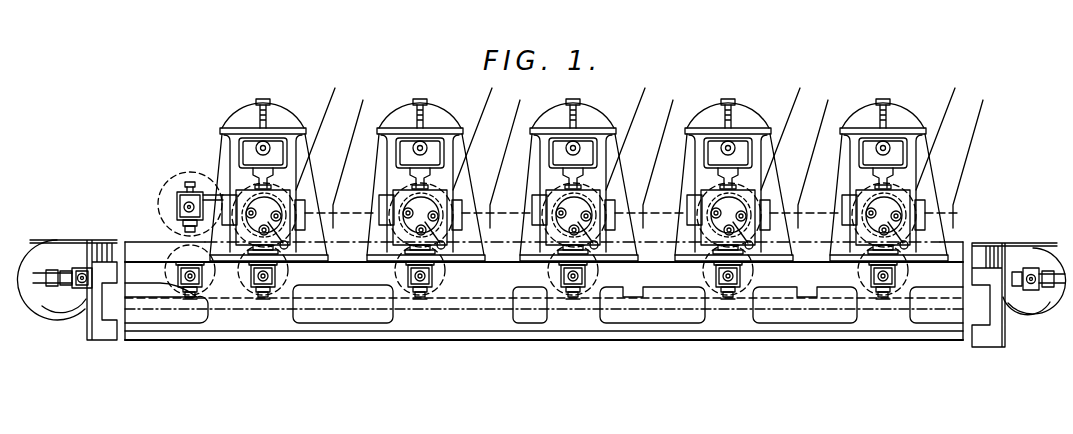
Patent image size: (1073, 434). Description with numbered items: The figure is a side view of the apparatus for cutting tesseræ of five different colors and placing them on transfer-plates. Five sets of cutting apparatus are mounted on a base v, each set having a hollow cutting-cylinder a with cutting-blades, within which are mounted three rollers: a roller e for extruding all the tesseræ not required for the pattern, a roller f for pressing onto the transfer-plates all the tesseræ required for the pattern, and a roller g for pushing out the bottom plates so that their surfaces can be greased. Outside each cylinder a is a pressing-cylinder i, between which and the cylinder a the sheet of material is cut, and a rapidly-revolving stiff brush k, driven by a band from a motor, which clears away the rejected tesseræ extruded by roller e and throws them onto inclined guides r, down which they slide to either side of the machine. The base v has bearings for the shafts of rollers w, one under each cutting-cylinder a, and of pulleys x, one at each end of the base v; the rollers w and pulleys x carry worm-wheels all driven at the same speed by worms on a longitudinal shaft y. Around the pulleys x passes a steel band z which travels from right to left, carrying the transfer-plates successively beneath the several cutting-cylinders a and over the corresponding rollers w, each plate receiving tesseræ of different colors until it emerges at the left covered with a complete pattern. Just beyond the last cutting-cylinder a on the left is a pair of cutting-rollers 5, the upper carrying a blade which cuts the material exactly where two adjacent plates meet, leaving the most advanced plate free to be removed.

The pressing-cylinder i is at (579, 175).
The cutting-cylinder a is at (574, 216).
The internal roller f is at (236, 236).
The internal roller e is at (306, 200).
The internal roller g is at (632, 212).
The revolving brush k is at (658, 166).
The inclined guides r is at (629, 166).
The cutting-rollers 5 is at (185, 206).
The pulleys x is at (72, 252).
The rollers w is at (536, 272).
The base v is at (544, 265).
The longitudinal shaft y is at (544, 307).
The steel band z is at (176, 302).